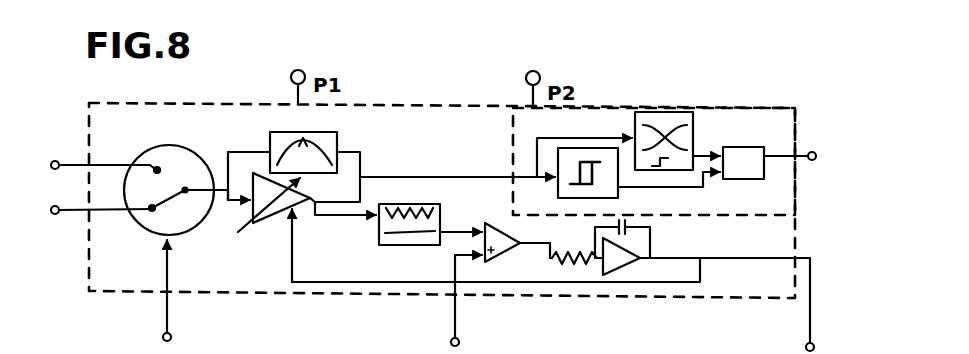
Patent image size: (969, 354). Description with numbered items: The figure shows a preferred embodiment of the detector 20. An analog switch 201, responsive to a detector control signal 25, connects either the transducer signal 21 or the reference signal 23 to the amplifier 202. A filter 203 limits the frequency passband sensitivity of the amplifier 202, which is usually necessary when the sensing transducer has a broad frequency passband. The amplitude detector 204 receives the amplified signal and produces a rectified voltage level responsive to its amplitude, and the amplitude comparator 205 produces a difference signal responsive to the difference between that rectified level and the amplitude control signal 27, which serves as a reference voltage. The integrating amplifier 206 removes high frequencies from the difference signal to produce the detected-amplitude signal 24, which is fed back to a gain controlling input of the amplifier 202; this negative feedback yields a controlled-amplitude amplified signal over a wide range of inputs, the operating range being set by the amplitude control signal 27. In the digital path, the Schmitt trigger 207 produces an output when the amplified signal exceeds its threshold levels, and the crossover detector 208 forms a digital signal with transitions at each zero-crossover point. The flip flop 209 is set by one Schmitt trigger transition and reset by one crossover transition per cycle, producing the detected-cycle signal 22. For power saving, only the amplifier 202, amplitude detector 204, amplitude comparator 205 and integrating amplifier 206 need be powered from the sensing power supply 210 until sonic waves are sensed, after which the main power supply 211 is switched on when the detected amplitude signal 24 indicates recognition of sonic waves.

The detector 20 is at (103, 98).
The transducer signal 21 is at (52, 165).
The detected-cycle signal 22 is at (818, 152).
The reference signal 23 is at (52, 210).
The detected-amplitude signal 24 is at (805, 350).
The detector control signal 25 is at (167, 296).
The amplitude control signal 27 is at (451, 340).
The analog switch 201 is at (178, 157).
The amplifier 202 is at (268, 212).
The filter 203 is at (322, 130).
The amplitude detector 204 is at (378, 232).
The amplitude comparator 205 is at (508, 255).
The integrating amplifier 206 is at (608, 272).
The Schmitt trigger 207 is at (597, 157).
The crossover detector 208 is at (693, 132).
The flip flop 209 is at (770, 190).
The sensing power supply 210 is at (303, 70).
The main power supply 211 is at (543, 75).